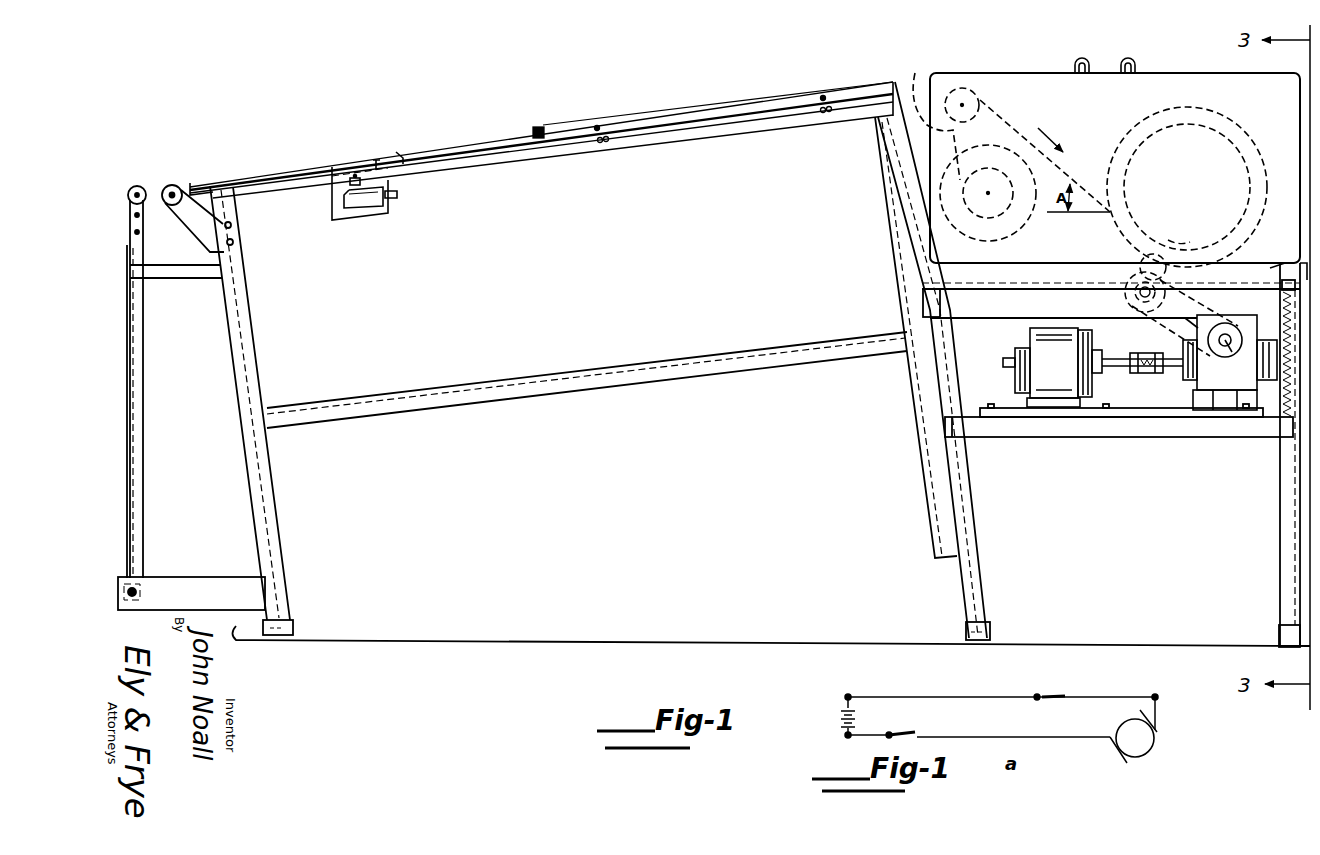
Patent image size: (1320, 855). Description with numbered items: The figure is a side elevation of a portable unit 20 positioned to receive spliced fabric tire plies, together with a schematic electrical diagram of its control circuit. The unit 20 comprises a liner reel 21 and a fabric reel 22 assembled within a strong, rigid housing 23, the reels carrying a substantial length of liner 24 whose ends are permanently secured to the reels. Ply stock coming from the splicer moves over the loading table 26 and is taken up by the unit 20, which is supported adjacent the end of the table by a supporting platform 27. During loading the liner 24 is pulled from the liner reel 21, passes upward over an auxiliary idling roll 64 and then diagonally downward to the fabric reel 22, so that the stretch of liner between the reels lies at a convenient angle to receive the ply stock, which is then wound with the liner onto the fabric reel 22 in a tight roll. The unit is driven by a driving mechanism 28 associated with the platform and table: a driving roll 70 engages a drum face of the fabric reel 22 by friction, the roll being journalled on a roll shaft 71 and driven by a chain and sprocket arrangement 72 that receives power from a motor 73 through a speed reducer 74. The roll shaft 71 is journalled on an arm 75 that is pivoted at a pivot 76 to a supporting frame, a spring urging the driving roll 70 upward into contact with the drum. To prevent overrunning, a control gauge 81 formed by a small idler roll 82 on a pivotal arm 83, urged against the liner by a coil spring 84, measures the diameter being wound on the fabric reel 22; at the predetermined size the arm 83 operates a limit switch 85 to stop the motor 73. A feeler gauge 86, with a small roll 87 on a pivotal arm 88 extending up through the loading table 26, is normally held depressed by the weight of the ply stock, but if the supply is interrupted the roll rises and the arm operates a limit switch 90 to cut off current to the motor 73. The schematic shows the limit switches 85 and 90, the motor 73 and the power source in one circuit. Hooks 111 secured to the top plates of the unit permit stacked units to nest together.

In FIG. 1, the portable unit 20 is at (1200, 72).
In FIG. 1, the liner reel 21 is at (973, 181).
In FIG. 1, the fabric reel 22 is at (1226, 138).
In FIG. 1, the housing 23 is at (1003, 73).
In FIG. 1, the liner 24 is at (1007, 117).
In FIG. 1, the loading table 26 is at (548, 163).
In FIG. 1, the supporting platform 27 is at (937, 271).
In FIG. 1, the driving mechanism 28 is at (1100, 380).
In FIG. 1, the auxiliary idling roll 64 is at (915, 73).
In FIG. 1, the driving roll 70 is at (1126, 276).
In FIG. 1, the roll shaft 71 is at (1128, 300).
In FIG. 1, the chain and sprocket arrangement 72 is at (1165, 337).
In FIG. 1, the motor 73 is at (1040, 348).
In FIG. 1A, the motor 73 is at (1155, 750).
In FIG. 1, the speed reducer 74 is at (1195, 362).
In FIG. 1, the arm 75 is at (1190, 322).
In FIG. 1, the pivot 76 is at (1250, 392).
In FIG. 1, the control gauge 81 is at (1170, 262).
In FIG. 1, the idler roll 82 is at (1178, 245).
In FIG. 1, the pivotal arm 83 is at (1283, 276).
In FIG. 1, the coil spring 84 is at (1290, 400).
In FIG. 1A, the limit switch 85 is at (1052, 696).
In FIG. 1, the feeler gauge 86 is at (372, 220).
In FIG. 1, the roll 87 is at (403, 158).
In FIG. 1, the pivotal arm 88 is at (377, 158).
In FIG. 1, the limit switch 90 is at (378, 195).
In FIG. 1A, the limit switch 90 is at (905, 735).
In FIG. 1, the hooks 111 is at (1082, 62).